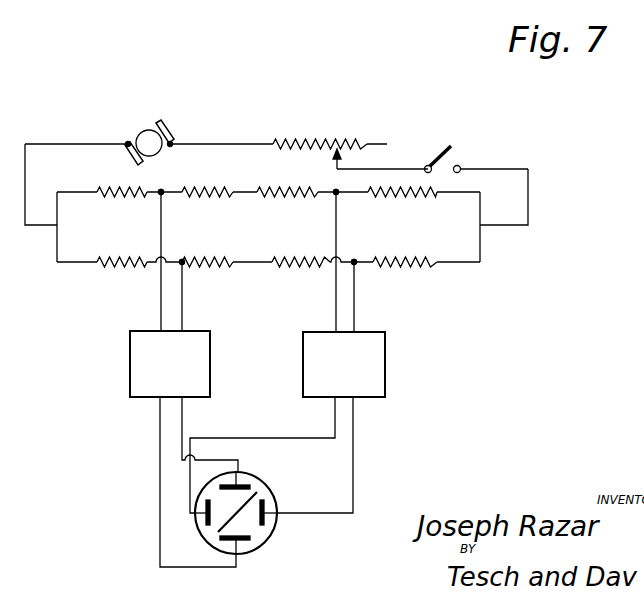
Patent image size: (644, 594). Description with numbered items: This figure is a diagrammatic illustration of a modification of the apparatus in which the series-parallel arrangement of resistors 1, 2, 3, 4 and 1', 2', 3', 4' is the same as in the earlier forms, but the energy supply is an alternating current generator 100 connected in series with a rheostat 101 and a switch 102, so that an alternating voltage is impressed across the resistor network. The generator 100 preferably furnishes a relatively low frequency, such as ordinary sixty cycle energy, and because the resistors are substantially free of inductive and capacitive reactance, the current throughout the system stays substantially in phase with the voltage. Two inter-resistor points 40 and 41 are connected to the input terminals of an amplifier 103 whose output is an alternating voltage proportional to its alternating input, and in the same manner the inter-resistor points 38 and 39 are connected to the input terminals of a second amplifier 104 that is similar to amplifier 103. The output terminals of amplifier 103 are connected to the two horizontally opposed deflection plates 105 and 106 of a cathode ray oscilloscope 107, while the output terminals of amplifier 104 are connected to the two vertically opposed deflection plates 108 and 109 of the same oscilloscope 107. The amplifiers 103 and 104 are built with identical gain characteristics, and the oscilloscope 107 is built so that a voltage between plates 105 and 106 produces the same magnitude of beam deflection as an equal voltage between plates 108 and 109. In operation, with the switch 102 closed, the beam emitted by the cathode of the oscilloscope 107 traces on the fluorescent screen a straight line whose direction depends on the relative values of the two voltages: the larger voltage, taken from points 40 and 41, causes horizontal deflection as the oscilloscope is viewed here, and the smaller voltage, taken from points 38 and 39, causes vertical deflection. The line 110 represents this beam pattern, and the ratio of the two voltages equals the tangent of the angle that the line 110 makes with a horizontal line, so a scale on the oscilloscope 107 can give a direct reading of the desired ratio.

The alternating current generator 100 is at (133, 132).
The rheostat 101 is at (326, 141).
The switch 102 is at (463, 153).
The resistor 1 is at (207, 179).
The resistor 2 is at (118, 179).
The resistor 3 is at (402, 208).
The resistor 4 is at (287, 179).
The resistor 1' is at (122, 247).
The resistor 2' is at (210, 247).
The resistor 3' is at (301, 247).
The resistor 4' is at (405, 280).
The inter-resistor point 38 is at (164, 190).
The inter-resistor point 39 is at (183, 259).
The inter-resistor point 40 is at (340, 196).
The inter-resistor point 41 is at (356, 259).
The amplifier 103 is at (387, 361).
The second amplifier 104 is at (128, 376).
The horizontally opposed deflection plate 105 is at (270, 502).
The horizontally opposed deflection plate 106 is at (197, 518).
The cathode ray oscilloscope 107 is at (278, 525).
The vertically opposed deflection plate 108 is at (243, 485).
The vertically opposed deflection plate 109 is at (240, 543).
The line 110 is at (240, 516).